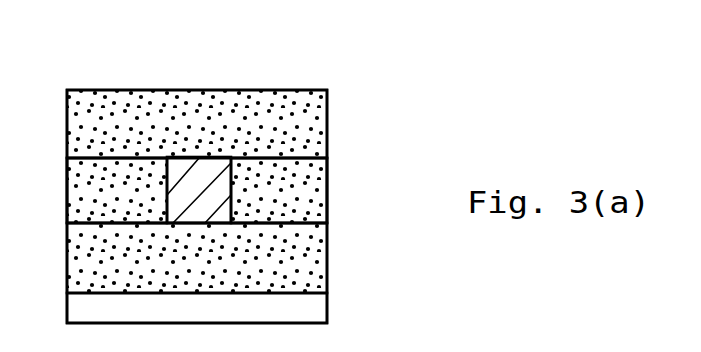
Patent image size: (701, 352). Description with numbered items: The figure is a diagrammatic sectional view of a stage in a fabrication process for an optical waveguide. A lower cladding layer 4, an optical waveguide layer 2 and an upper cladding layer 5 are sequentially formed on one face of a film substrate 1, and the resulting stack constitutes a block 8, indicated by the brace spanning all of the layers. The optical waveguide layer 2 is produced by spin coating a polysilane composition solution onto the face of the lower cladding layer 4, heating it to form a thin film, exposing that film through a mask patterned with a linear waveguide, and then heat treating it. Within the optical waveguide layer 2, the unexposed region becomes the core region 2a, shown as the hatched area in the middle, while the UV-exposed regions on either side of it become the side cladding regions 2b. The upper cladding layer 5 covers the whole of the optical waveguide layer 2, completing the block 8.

The film substrate 1 is at (308, 303).
The optical waveguide layer 2 is at (300, 186).
The core region 2a is at (199, 195).
The side cladding region 2b is at (113, 195).
The lower cladding layer 4 is at (303, 248).
The upper cladding layer 5 is at (302, 120).
The block 8 is at (52, 90).